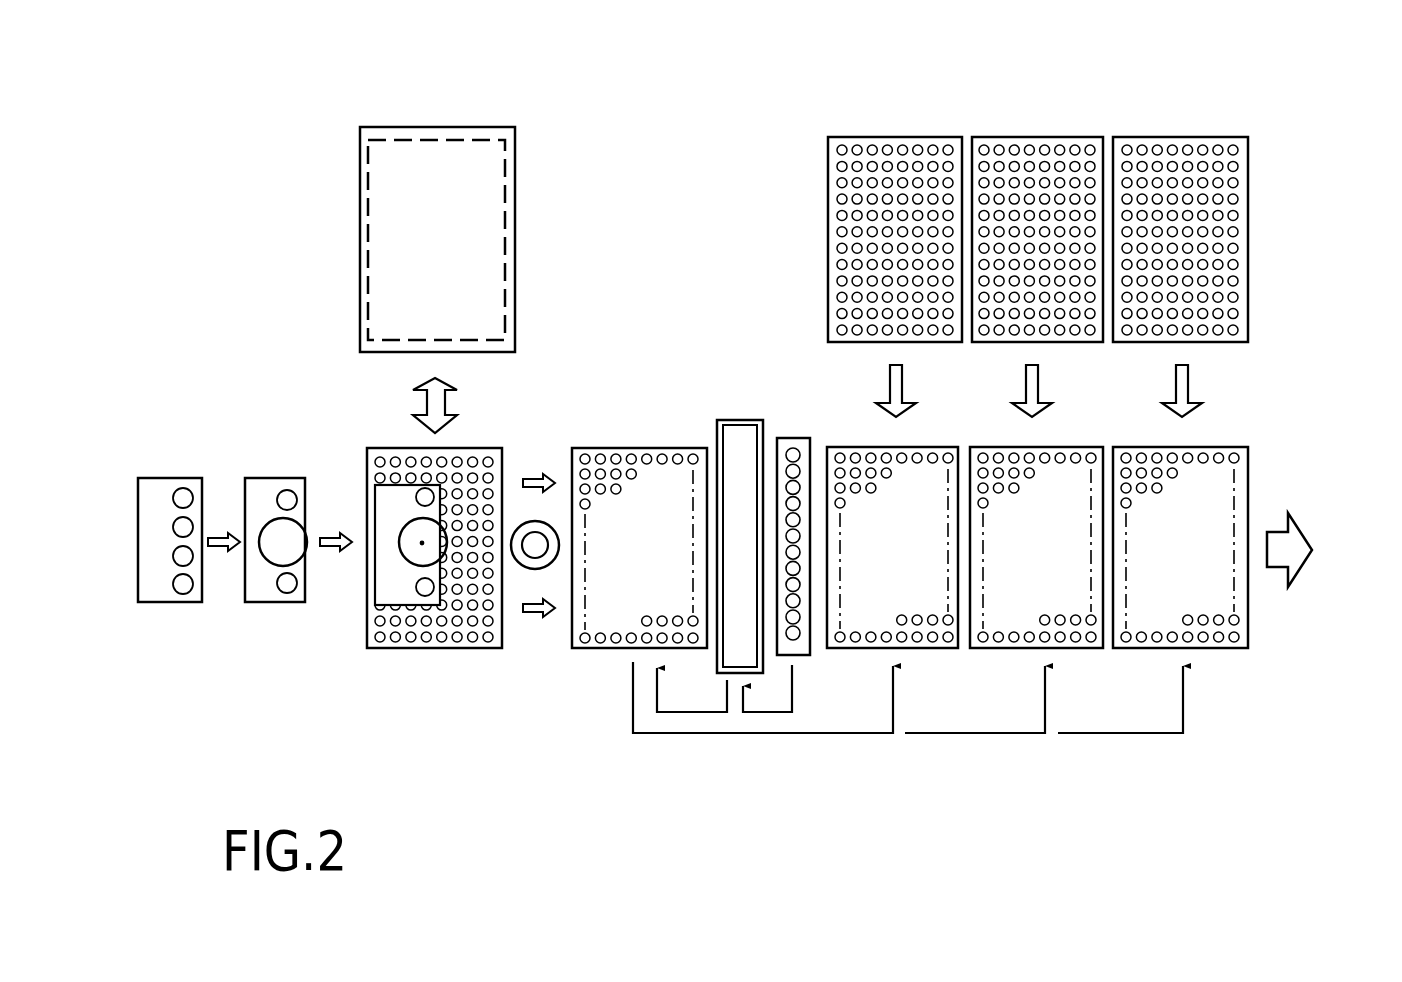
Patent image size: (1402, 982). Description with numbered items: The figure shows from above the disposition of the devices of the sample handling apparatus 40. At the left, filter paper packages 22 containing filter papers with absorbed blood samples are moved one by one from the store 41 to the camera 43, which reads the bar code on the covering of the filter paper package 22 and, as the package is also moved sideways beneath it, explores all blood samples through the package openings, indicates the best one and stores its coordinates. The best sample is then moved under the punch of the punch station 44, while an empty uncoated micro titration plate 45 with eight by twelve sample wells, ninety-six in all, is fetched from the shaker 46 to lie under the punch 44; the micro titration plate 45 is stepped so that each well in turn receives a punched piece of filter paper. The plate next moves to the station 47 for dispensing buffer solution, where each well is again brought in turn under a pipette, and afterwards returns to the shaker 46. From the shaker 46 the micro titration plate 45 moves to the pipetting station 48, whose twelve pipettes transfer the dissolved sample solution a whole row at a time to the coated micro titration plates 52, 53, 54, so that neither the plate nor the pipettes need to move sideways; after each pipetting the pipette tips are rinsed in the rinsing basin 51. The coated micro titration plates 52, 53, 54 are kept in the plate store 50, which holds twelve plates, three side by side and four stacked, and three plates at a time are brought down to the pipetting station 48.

The filter paper package 22 is at (157, 602).
The sample handling apparatus 40 is at (744, 122).
The store 41 is at (166, 462).
The camera 43 is at (272, 527).
The punch station 44 is at (400, 550).
The micro titration plate 45 is at (498, 586).
The shaker 46 is at (358, 213).
The buffer solution dispensing station 47 is at (513, 536).
The pipetting station 48 is at (792, 438).
The plate store 50 is at (1290, 214).
The rinsing basin 51 is at (735, 425).
The coated micro titration plate 52 is at (922, 145).
The coated micro titration plate 53 is at (1052, 137).
The coated micro titration plate 54 is at (1182, 137).